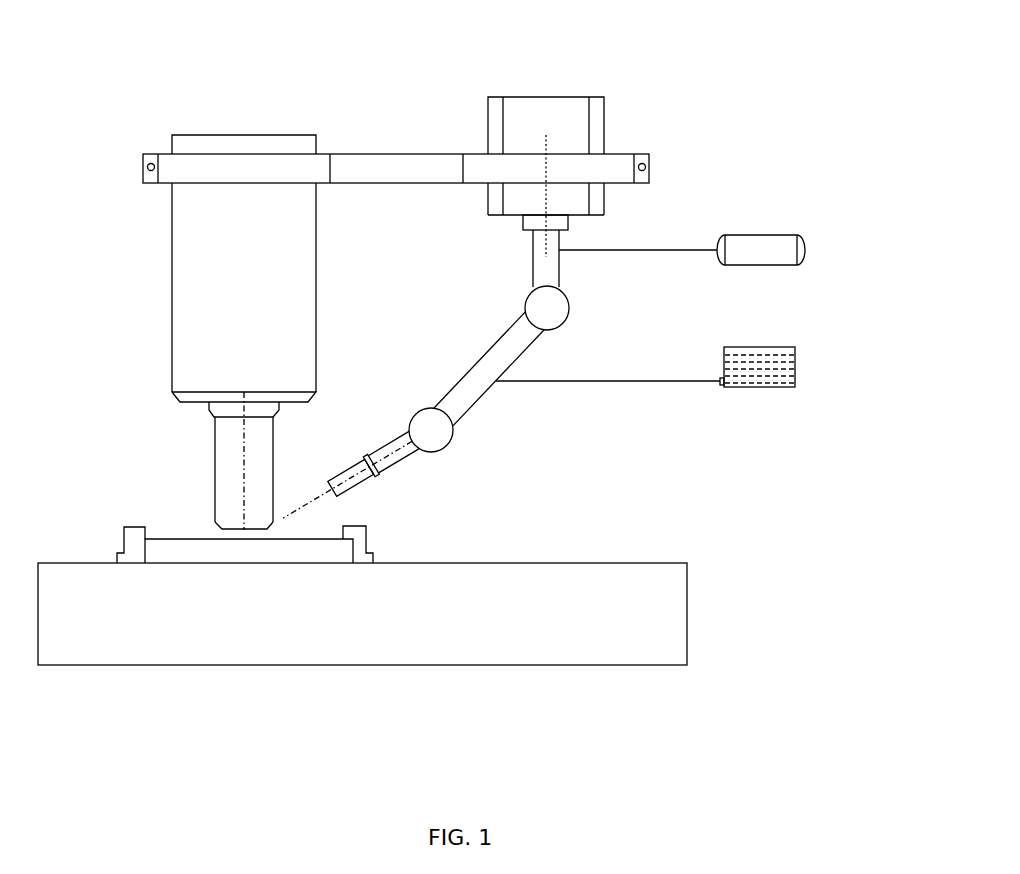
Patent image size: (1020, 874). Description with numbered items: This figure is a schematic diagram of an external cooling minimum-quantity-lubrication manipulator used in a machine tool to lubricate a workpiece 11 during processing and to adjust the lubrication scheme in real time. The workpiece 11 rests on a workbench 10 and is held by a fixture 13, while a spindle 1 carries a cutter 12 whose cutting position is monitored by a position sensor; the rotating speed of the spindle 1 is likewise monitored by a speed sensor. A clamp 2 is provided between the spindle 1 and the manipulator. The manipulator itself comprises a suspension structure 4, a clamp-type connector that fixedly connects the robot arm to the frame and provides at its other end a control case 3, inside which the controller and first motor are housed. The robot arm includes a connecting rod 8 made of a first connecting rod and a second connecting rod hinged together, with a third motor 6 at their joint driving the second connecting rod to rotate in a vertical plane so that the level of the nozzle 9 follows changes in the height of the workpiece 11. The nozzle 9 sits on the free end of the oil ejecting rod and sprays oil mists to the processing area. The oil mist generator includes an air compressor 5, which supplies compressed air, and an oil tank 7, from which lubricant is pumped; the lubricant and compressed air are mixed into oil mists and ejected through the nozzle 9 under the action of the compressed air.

The spindle 1 is at (233, 277).
The clamp 2 is at (396, 103).
The control case 3 is at (569, 140).
The suspension structure 4 is at (695, 227).
The air compressor 5 is at (713, 245).
The third motor 6 is at (696, 306).
The oil tank 7 is at (686, 377).
The connecting rod 8 is at (642, 394).
The nozzle 9 is at (579, 498).
The workbench 10 is at (465, 614).
The workpiece 11 is at (450, 649).
The cutter 12 is at (388, 633).
The fixture 13 is at (245, 641).